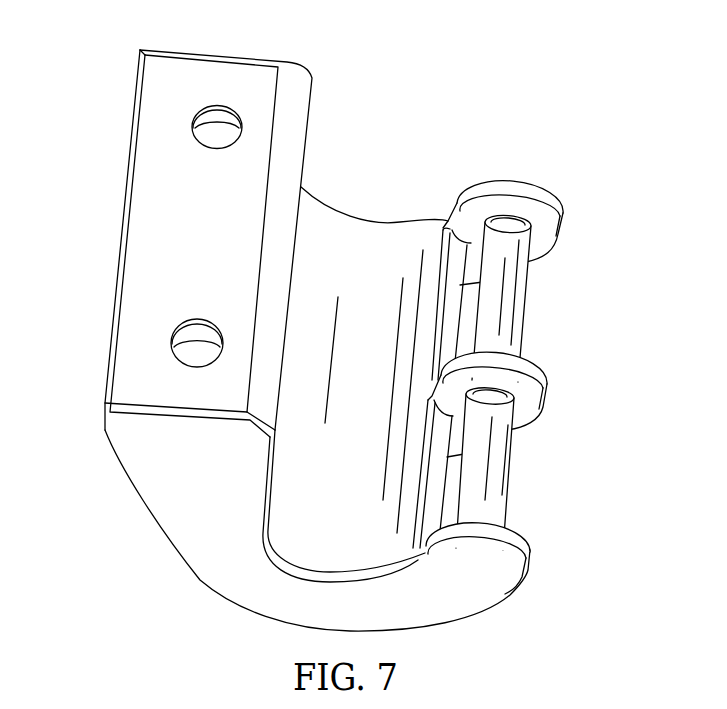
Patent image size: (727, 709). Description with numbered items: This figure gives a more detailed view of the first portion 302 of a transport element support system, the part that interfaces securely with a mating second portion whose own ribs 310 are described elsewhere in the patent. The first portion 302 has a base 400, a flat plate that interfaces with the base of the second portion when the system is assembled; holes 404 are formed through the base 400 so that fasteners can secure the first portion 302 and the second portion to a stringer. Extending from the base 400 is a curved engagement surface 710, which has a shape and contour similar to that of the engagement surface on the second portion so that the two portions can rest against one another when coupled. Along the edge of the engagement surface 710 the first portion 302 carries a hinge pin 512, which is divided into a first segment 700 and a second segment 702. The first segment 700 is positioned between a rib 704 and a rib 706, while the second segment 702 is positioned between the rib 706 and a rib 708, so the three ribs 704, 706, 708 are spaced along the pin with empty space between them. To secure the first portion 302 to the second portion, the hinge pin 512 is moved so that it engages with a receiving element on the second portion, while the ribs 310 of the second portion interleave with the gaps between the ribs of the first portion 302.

The first portion 302 is at (165, 520).
The ribs 310 is at (590, 186).
The base 400 is at (138, 234).
The holes 404 is at (218, 117).
The hinge pin 512 is at (564, 447).
The first segment 700 is at (521, 296).
The second segment 702 is at (507, 472).
The rib 704 is at (515, 188).
The rib 706 is at (548, 383).
The rib 708 is at (533, 558).
The engagement surface 710 is at (378, 231).